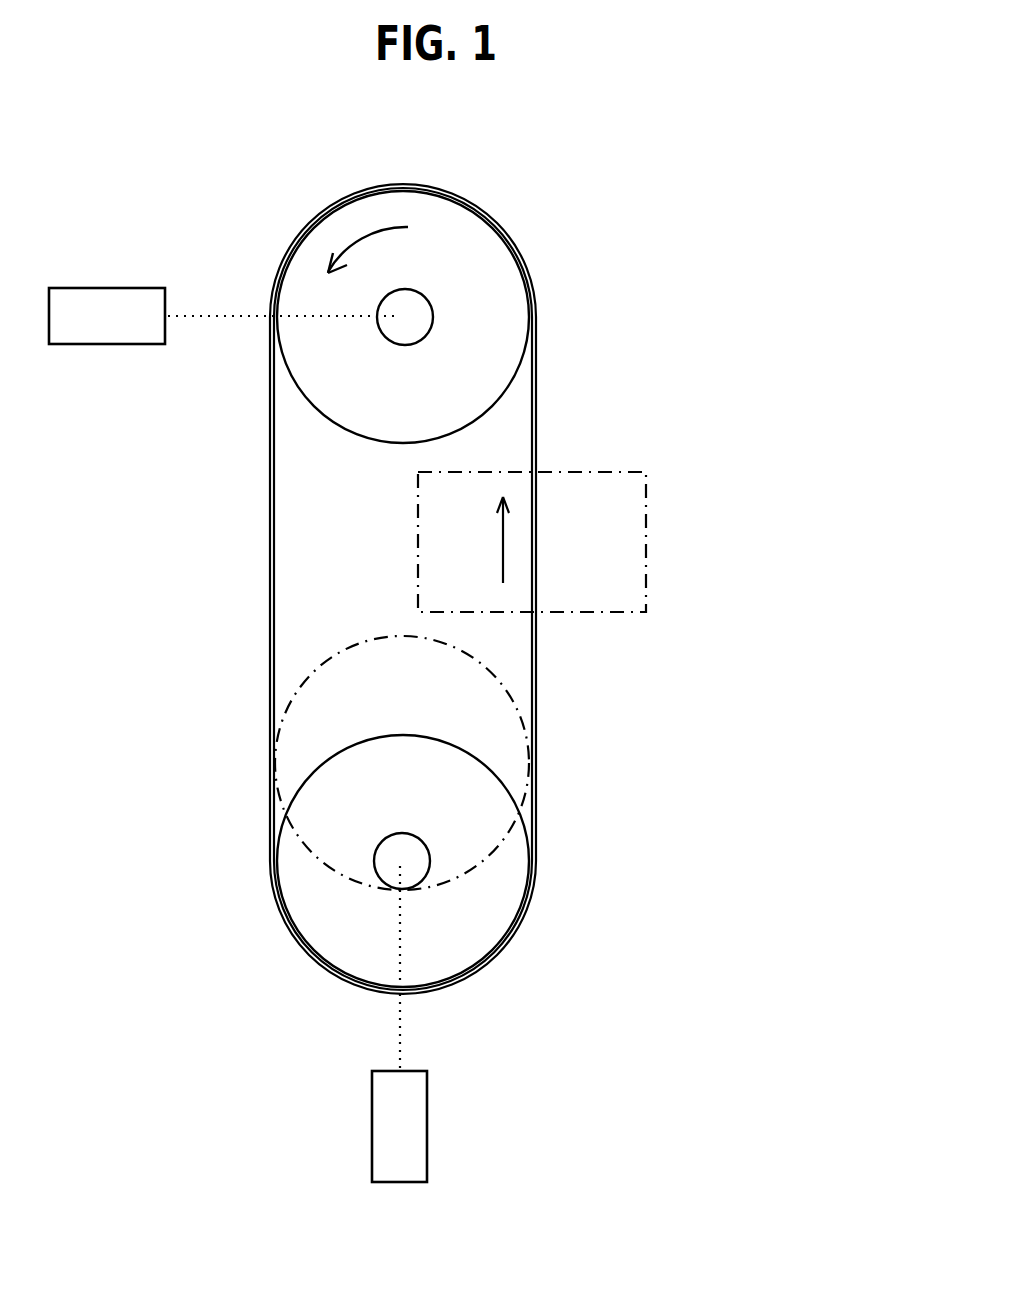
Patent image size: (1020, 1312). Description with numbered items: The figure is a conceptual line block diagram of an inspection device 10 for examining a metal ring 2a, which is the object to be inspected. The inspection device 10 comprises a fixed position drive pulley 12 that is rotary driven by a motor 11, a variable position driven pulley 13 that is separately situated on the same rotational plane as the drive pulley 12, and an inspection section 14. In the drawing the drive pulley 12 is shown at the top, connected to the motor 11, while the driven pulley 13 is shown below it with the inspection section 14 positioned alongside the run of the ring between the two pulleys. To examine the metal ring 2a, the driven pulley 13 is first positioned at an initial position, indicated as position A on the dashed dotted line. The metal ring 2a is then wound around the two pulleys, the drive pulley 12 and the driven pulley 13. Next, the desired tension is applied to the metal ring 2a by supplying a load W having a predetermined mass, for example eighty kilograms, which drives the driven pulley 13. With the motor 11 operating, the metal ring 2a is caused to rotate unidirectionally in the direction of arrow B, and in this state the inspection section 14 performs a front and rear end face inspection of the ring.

The inspection device 10 is at (616, 259).
The motor 11 is at (105, 288).
The drive pulley 12 is at (448, 234).
The driven pulley 13 is at (470, 952).
The inspection section 14 is at (690, 472).
The metal ring 2a is at (537, 676).
The initial position A is at (373, 638).
The rotation direction arrow B is at (503, 536).
The load W is at (427, 1124).